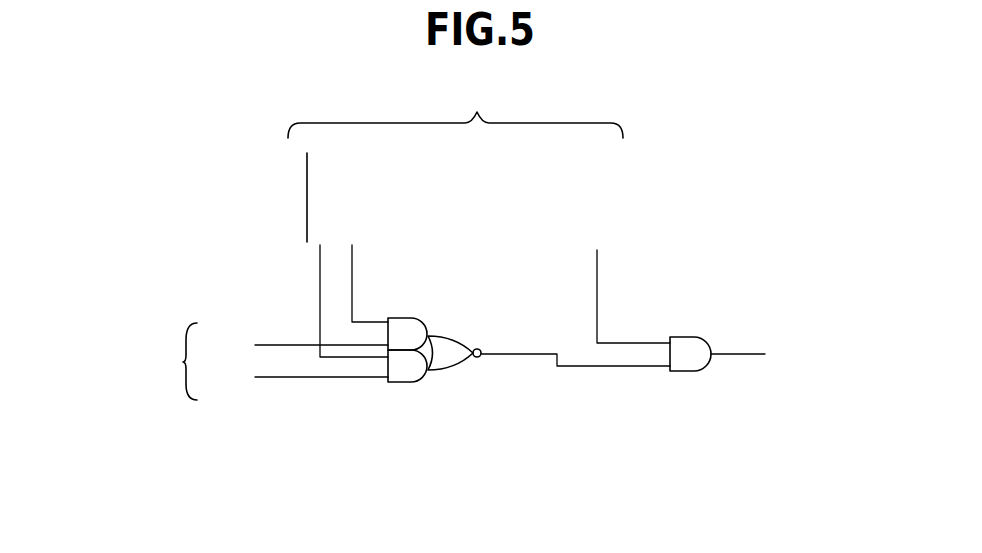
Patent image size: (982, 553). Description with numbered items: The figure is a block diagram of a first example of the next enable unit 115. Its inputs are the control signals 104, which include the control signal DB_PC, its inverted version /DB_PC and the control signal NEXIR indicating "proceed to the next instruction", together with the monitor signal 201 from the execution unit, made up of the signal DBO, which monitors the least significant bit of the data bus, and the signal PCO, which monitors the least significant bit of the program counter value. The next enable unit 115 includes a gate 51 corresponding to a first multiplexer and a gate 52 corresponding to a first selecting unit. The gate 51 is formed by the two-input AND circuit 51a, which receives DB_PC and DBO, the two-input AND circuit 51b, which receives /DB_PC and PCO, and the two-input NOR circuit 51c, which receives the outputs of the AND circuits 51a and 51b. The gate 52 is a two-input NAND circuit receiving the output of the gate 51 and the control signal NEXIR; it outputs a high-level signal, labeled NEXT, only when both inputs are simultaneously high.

The gate 51 is at (430, 376).
The AND circuit 51a is at (410, 318).
The AND circuit 51b is at (410, 384).
The NOR circuit 51c is at (455, 335).
The gate 52 is at (687, 371).
The control signals 104 is at (479, 216).
The next enable unit 115 is at (754, 108).
The monitor signal 201 is at (206, 361).